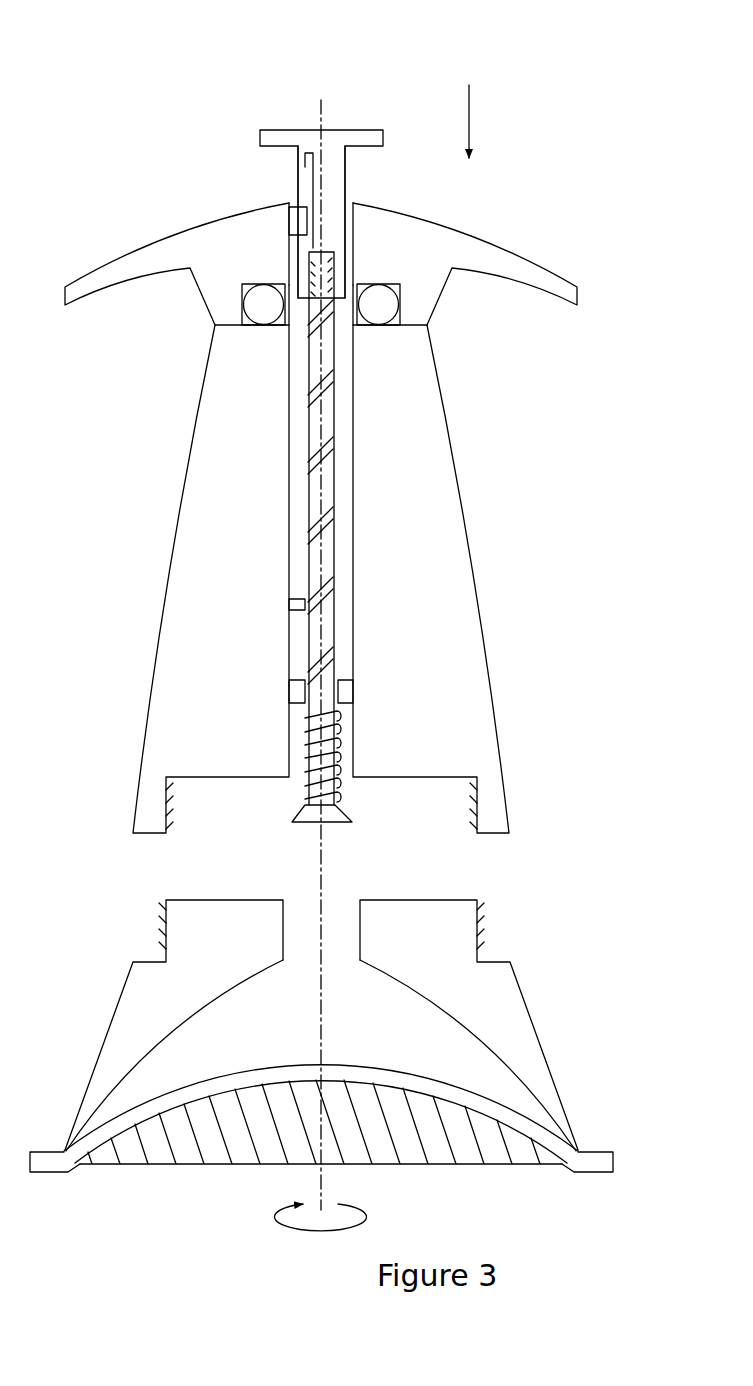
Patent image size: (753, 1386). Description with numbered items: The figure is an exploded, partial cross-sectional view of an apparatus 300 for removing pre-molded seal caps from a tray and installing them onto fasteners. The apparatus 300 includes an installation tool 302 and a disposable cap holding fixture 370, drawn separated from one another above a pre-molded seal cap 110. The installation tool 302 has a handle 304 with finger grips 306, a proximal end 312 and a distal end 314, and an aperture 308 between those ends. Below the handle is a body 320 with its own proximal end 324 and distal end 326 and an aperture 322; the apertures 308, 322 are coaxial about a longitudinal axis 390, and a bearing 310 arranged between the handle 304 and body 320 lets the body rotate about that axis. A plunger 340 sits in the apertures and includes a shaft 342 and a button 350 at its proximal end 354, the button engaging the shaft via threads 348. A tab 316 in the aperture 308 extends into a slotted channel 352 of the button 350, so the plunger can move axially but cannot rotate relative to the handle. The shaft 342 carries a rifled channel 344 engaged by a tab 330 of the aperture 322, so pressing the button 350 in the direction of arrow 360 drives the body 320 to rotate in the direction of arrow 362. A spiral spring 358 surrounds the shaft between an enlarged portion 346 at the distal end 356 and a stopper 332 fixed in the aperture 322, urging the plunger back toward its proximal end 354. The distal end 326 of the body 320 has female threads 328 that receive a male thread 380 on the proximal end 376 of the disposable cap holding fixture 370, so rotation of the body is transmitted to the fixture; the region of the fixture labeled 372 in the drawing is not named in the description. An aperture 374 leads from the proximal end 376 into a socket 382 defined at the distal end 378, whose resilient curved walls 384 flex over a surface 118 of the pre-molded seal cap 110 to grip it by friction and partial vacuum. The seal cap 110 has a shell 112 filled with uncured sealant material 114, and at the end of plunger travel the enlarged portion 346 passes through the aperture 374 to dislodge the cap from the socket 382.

The apparatus 300 is at (627, 190).
The installation tool 302 is at (600, 398).
The handle 304 is at (328, 246).
The finger grips 306 is at (123, 265).
The aperture 308 is at (355, 222).
The bearing 310 is at (262, 322).
The proximal end 312 is at (265, 173).
The distal end 314 is at (211, 325).
The tab 316 is at (302, 222).
The body 320 is at (324, 584).
The aperture 322 is at (353, 465).
The proximal end 324 is at (407, 315).
The distal end 326 is at (428, 842).
The female threads 328 is at (166, 810).
The tab 330 is at (290, 604).
The stopper 332 is at (343, 692).
The plunger 340 is at (330, 551).
The shaft 342 is at (312, 637).
The rifled channel 344 is at (312, 530).
The enlarged portion 346 is at (317, 813).
The threads 348 is at (334, 270).
The button 350 is at (337, 138).
The slotted channel 352 is at (313, 155).
The proximal end 354 is at (337, 108).
The distal end 356 is at (337, 828).
The spiral spring 358 is at (340, 738).
The arrow 360 is at (469, 108).
The arrow 362 is at (321, 1229).
The disposable cap holding fixture 370 is at (580, 972).
The base body 372 is at (313, 1025).
The aperture 374 is at (362, 917).
The proximal end 376 is at (232, 892).
The distal end 378 is at (117, 1172).
The male thread 380 is at (166, 930).
The socket 382 is at (321, 1055).
The curved walls 384 is at (530, 1108).
The pre-molded seal cap 110 is at (321, 1129).
The shell 112 is at (321, 1112).
The sealant material 114 is at (246, 1136).
The surface 118 is at (400, 1073).
The longitudinal axis 390 is at (322, 1175).